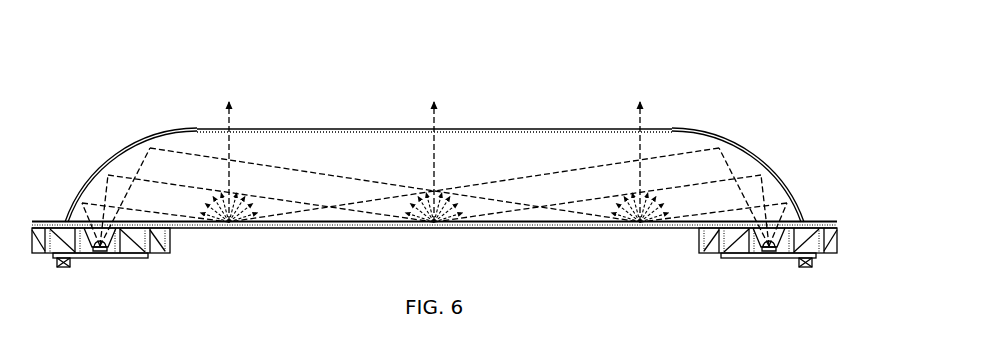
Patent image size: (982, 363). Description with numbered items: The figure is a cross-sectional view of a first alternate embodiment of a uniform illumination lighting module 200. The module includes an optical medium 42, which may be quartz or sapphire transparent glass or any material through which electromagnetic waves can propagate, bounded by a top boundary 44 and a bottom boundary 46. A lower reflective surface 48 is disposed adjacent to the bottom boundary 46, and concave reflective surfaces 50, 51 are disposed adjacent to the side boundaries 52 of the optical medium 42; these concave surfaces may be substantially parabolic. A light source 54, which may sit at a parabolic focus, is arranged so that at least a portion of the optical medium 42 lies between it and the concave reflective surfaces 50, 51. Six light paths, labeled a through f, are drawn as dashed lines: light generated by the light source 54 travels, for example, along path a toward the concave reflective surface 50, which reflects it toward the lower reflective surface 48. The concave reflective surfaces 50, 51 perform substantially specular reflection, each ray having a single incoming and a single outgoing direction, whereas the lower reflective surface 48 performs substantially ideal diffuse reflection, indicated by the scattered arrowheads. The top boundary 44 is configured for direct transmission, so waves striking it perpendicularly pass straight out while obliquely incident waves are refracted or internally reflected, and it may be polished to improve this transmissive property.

The uniform illumination lighting module 200 is at (156, 52).
The optical medium 42 is at (486, 146).
The top boundary 44 is at (328, 130).
The bottom boundary 46 is at (327, 228).
The lower reflective surface 48 is at (511, 228).
The concave reflective surface 50 is at (134, 153).
The concave reflective surface 51 is at (738, 152).
The side boundary 52 is at (96, 189).
The light source 54 is at (100, 250).